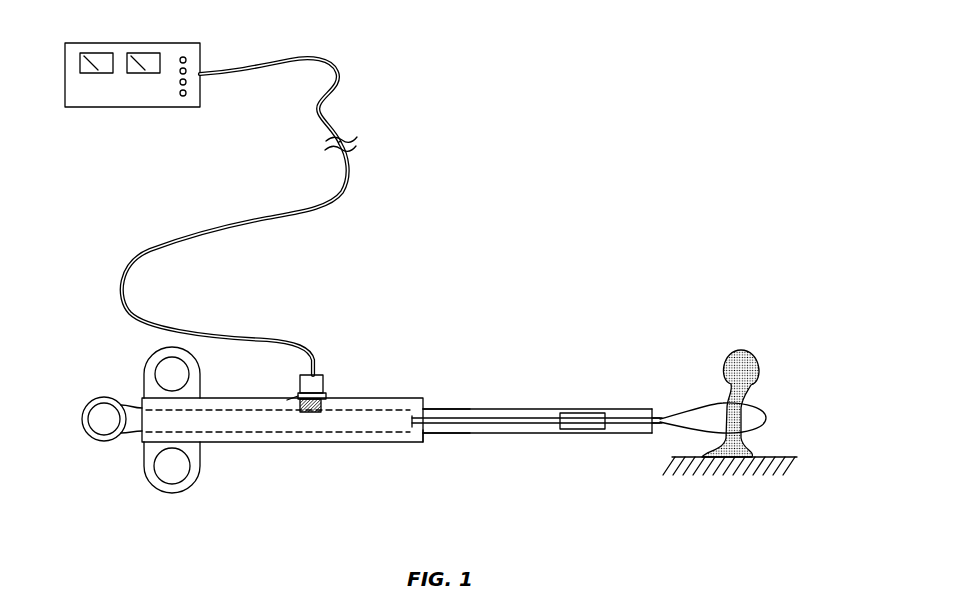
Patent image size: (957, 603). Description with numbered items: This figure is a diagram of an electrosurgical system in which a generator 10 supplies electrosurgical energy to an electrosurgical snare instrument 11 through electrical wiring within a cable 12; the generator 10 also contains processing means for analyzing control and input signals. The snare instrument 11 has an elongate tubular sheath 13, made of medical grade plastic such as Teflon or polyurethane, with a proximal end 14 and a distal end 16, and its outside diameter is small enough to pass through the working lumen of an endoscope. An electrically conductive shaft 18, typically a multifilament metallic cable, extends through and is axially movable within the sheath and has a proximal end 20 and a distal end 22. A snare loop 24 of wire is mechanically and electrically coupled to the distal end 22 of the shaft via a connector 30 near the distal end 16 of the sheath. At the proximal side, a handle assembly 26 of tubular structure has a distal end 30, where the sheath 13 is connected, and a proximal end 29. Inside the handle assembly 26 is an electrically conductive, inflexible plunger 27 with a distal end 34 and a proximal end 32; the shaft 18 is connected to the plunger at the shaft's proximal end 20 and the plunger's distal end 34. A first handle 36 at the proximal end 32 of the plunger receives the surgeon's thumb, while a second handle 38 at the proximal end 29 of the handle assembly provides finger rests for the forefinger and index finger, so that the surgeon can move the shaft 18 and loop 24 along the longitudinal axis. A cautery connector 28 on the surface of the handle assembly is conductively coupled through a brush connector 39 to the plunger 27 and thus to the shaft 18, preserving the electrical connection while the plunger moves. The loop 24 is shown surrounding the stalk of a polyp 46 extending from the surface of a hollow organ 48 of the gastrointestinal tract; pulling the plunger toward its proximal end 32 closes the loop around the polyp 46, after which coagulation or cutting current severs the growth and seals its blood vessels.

The generator 10 is at (132, 42).
The electrosurgical snare instrument 11 is at (411, 387).
The cable 12 is at (303, 58).
The elongate tubular sheath 13 is at (543, 407).
The proximal end 14 is at (427, 437).
The distal end 16 is at (657, 407).
The electrically conductive shaft 18 is at (487, 418).
The proximal end 20 is at (432, 408).
The distal end 22 is at (650, 433).
The snare loop 24 is at (765, 417).
The handle assembly 26 is at (268, 445).
The plunger 27 is at (315, 432).
The cautery connector 28 is at (318, 373).
The proximal end 29 is at (142, 400).
The distal end 30 is at (417, 441).
The proximal end 32 is at (142, 438).
The distal end 34 is at (407, 410).
The first handle 36 is at (83, 422).
The second handle 38 is at (143, 375).
The brush connector 39 is at (287, 400).
The polyp 46 is at (748, 352).
The hollow organ 48 is at (790, 470).